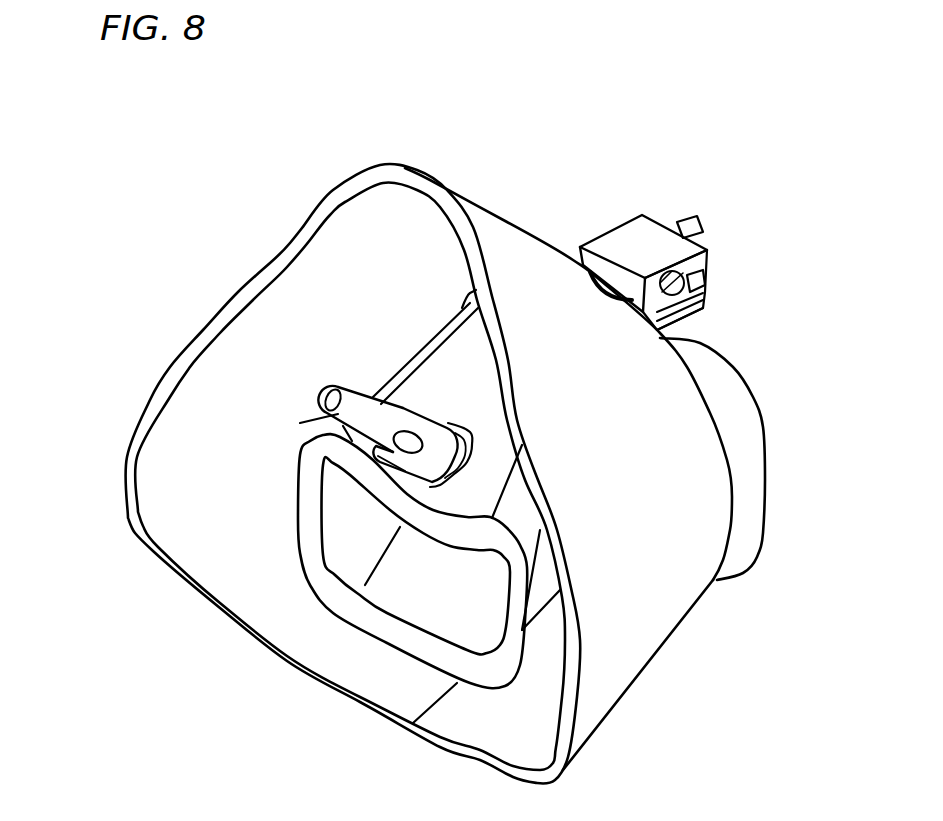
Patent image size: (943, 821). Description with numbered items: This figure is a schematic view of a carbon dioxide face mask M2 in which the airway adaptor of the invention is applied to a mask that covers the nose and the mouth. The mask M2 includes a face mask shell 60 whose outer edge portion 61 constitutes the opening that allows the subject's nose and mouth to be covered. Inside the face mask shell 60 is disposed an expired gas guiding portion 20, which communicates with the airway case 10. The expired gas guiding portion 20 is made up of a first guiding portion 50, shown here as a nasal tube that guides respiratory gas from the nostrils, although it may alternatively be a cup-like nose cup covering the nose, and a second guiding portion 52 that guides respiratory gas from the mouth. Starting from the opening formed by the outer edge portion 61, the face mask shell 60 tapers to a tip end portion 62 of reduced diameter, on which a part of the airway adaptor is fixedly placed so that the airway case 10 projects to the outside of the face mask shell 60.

The airway case 10 is at (658, 220).
The expired gas guiding portion 20 is at (353, 382).
The first guiding portion 50 is at (313, 421).
The second guiding portion 52 is at (413, 597).
The face mask shell 60 is at (317, 305).
The outer edge portion 61 is at (128, 463).
The tip end portion 62 is at (710, 344).
The carbon dioxide face mask M2 is at (500, 210).